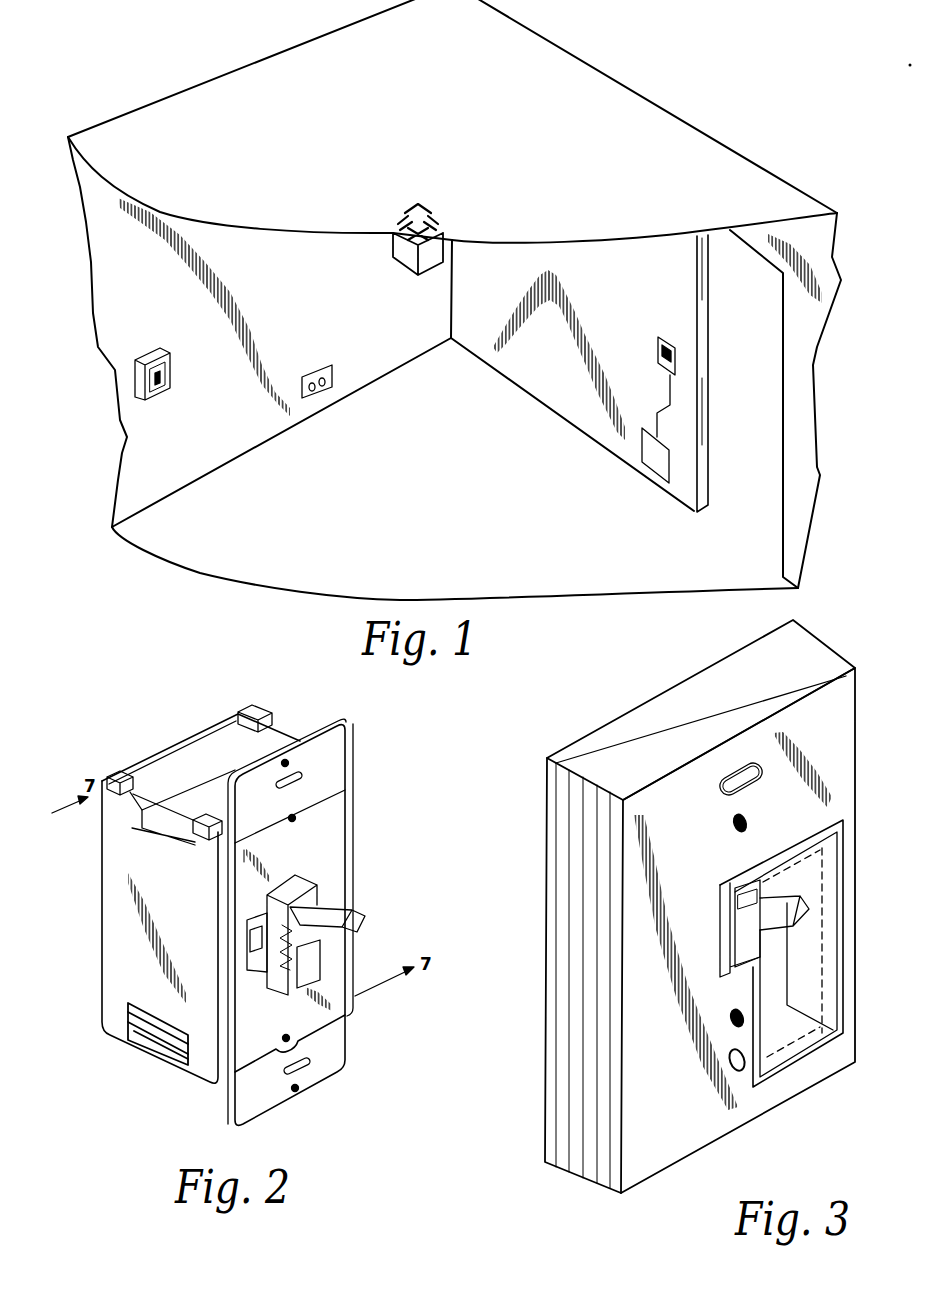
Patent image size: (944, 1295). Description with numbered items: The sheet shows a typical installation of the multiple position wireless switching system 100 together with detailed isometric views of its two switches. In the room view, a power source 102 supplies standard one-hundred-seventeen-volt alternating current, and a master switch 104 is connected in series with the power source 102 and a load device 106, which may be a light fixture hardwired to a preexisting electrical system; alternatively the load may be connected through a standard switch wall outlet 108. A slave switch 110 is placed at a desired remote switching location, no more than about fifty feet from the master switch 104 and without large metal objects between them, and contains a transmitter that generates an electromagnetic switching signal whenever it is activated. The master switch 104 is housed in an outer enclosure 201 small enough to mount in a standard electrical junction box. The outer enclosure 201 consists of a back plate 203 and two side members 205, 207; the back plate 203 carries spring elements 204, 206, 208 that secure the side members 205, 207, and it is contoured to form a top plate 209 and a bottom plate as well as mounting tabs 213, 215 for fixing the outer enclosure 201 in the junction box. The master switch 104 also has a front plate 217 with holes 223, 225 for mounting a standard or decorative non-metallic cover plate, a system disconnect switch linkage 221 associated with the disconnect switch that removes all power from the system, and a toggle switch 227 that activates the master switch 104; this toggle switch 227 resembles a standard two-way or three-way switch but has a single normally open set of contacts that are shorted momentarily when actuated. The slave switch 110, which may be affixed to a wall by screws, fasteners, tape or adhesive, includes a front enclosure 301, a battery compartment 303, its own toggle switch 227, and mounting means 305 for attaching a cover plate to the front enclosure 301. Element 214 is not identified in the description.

In FIG. 1, the multiple position wireless switching system 100 is at (610, 58).
In FIG. 1, the power source 102 is at (648, 467).
In FIG. 1, the master switch 104 is at (687, 352).
In FIG. 2, the master switch 104 is at (242, 898).
In FIG. 1, the load device 106 is at (452, 252).
In FIG. 1, the switch wall outlet 108 is at (333, 372).
In FIG. 1, the slave switch 110 is at (170, 366).
In FIG. 3, the slave switch 110 is at (686, 894).
In FIG. 2, the outer enclosure 201 is at (178, 883).
In FIG. 2, the back plate 203 is at (183, 762).
In FIG. 2, the spring element 204 is at (170, 797).
In FIG. 2, the side member 205 is at (111, 958).
In FIG. 2, the spring element 206 is at (267, 742).
In FIG. 2, the side member 207 is at (358, 848).
In FIG. 2, the spring element 208 is at (168, 1047).
In FIG. 2, the top plate 209 is at (212, 753).
In FIG. 2, the mounting tab 213 is at (342, 737).
In FIG. 2, the switch module 214 is at (250, 940).
In FIG. 2, the mounting tab 215 is at (330, 1052).
In FIG. 2, the front plate 217 is at (331, 821).
In FIG. 2, the system disconnect switch linkage 221 is at (281, 988).
In FIG. 2, the hole 223 is at (293, 822).
In FIG. 2, the hole 225 is at (287, 1030).
In FIG. 2, the toggle switch 227 is at (357, 922).
In FIG. 3, the toggle switch 227 is at (840, 921).
In FIG. 3, the front enclosure 301 is at (563, 1043).
In FIG. 3, the battery compartment 303 is at (793, 1030).
In FIG. 3, the mounting means 305 is at (749, 823).